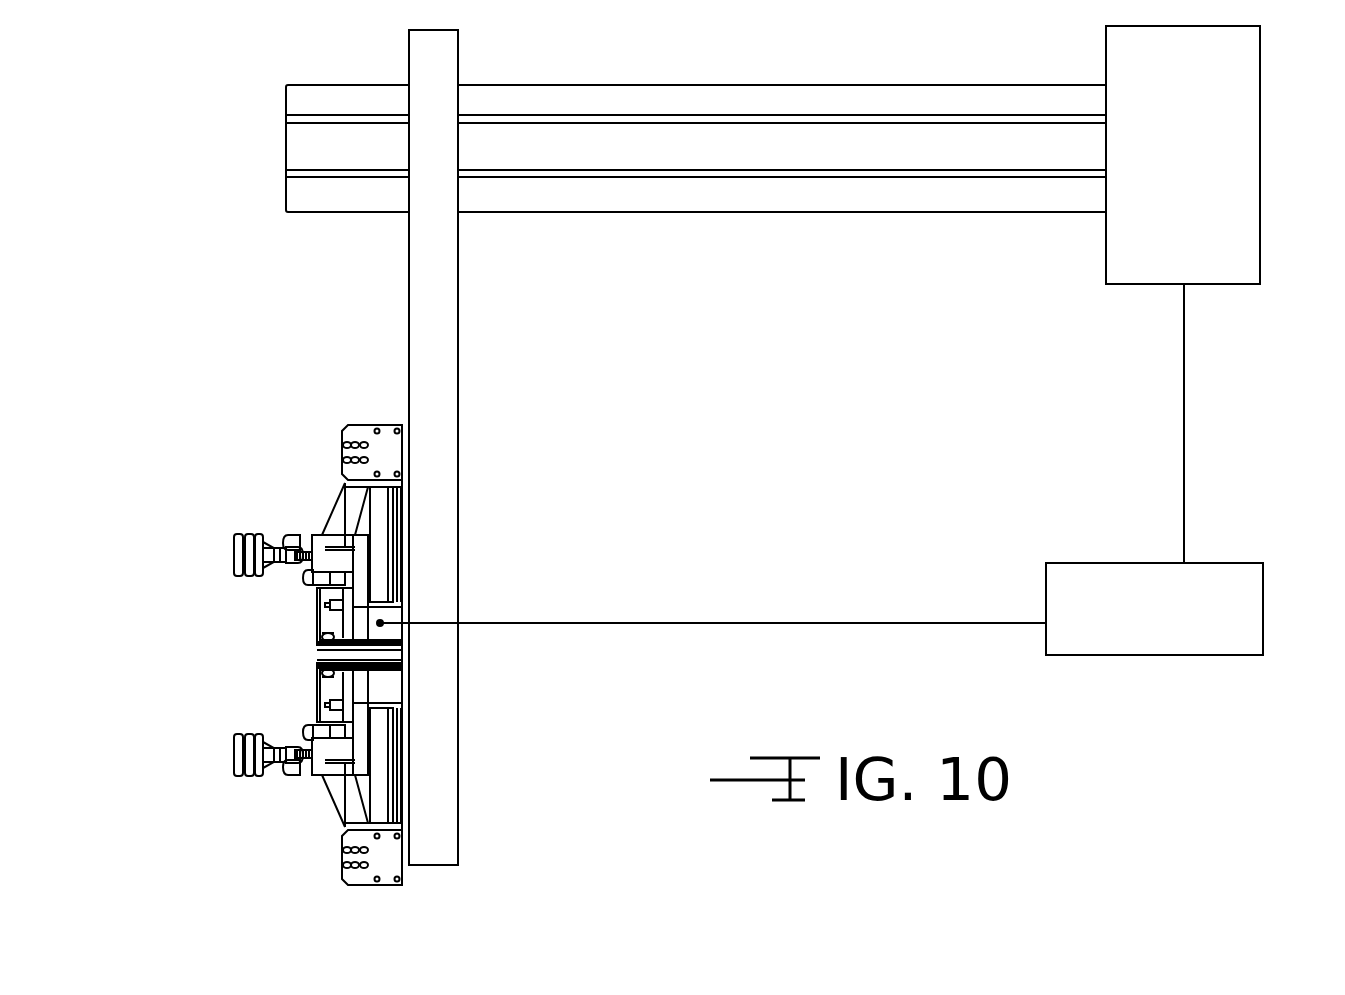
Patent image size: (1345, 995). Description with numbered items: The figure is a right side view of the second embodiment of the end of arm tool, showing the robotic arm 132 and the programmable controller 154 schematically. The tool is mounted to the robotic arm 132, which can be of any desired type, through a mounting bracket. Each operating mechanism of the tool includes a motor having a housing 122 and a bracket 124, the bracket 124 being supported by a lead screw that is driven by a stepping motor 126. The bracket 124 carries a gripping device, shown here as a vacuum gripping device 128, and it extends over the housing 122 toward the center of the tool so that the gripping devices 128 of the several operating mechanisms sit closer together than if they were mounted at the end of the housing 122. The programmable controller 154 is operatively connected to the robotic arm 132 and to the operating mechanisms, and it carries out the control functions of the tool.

The housing 122 is at (398, 792).
The bracket 124 is at (345, 845).
The stepping motor 126 is at (388, 695).
The vacuum gripping device 128 is at (233, 751).
The robotic arm 132 is at (458, 421).
The programmable controller 154 is at (1220, 563).